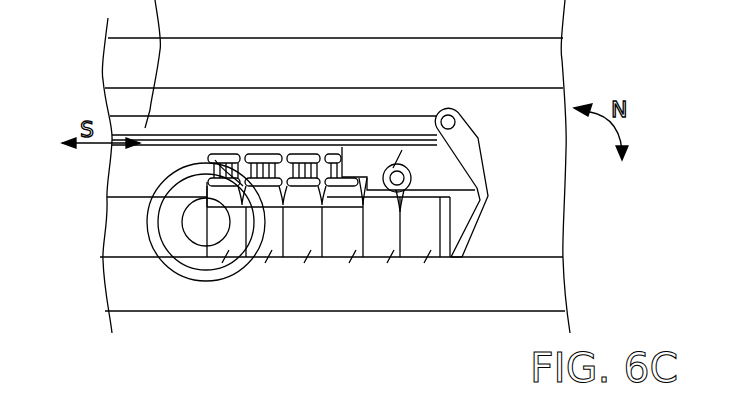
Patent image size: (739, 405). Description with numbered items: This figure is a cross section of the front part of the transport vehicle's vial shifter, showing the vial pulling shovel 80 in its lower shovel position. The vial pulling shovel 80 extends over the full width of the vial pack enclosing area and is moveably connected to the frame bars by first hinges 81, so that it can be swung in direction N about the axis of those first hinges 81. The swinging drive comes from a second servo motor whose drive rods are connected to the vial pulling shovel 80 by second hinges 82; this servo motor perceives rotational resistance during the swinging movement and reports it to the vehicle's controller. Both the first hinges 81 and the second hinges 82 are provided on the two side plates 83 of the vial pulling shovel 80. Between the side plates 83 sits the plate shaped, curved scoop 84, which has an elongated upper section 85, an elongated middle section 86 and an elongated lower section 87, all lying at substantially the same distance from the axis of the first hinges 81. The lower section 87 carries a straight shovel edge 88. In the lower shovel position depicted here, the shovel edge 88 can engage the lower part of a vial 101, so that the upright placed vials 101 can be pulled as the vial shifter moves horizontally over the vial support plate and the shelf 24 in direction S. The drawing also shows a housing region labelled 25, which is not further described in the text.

The shelf 24 is at (403, 295).
The housing 25 is at (532, 257).
The vial pulling shovel 80 is at (477, 123).
The first hinges 81 is at (393, 196).
The second hinges 82 is at (447, 115).
The side plates 83 is at (430, 165).
The curved scoop 84 is at (480, 180).
The upper section 85 is at (467, 158).
The middle section 86 is at (482, 203).
The lower section 87 is at (467, 233).
The shovel edge 88 is at (453, 262).
The vials 101 is at (427, 250).